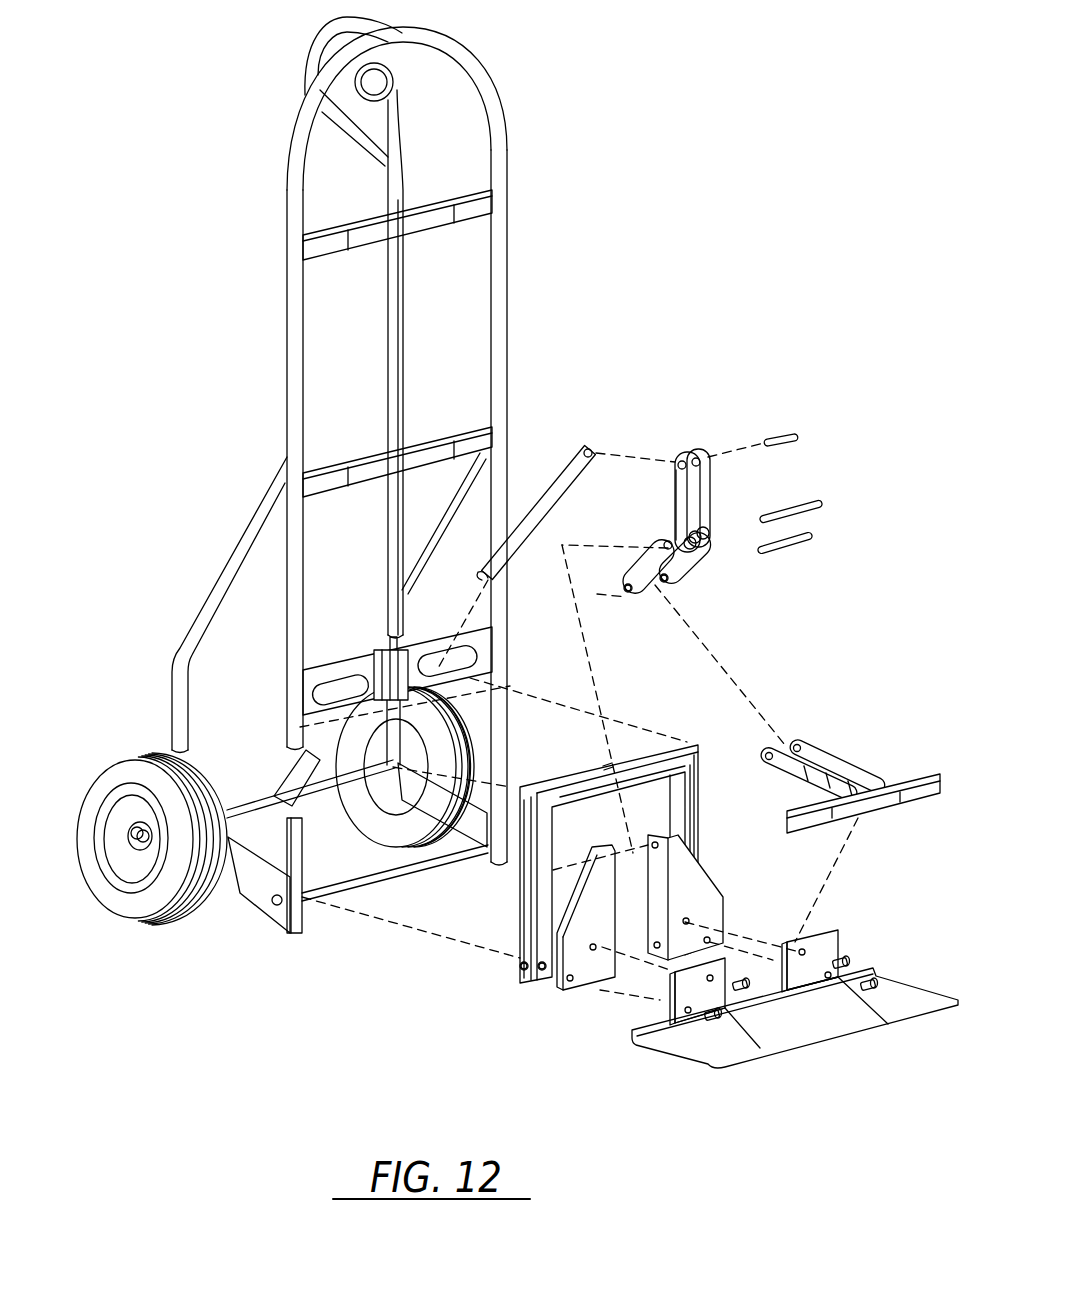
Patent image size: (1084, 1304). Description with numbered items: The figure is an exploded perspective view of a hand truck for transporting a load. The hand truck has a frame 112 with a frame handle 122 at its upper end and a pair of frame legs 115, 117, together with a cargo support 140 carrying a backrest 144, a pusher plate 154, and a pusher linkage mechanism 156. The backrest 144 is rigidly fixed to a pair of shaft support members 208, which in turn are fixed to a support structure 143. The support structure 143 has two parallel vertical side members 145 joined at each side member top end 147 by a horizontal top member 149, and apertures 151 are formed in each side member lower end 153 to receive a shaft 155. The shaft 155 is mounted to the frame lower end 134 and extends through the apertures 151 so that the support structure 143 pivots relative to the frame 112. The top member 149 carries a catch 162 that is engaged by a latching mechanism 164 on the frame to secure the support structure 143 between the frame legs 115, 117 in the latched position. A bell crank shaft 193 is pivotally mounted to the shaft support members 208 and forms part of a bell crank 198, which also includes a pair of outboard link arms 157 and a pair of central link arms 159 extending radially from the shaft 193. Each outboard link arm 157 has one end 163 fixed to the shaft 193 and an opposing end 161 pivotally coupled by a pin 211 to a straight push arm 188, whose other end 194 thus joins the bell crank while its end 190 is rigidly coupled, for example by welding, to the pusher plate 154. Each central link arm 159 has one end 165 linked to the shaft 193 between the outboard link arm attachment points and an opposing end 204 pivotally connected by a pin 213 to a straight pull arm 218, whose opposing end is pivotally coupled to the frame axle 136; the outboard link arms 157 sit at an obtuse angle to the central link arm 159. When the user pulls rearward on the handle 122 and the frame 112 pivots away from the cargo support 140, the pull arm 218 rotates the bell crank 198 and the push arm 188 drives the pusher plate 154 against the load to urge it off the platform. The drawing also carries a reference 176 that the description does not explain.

The frame 112 is at (505, 287).
The frame handle 122 is at (305, 58).
The frame leg 117 is at (298, 660).
The frame leg 115 is at (500, 655).
The latching mechanism 164 is at (380, 660).
The pull arm 218 is at (542, 500).
The pin 213 is at (792, 435).
The central link arm end 204 is at (687, 453).
The central link arm 159 is at (680, 480).
The bell crank 198 is at (668, 548).
The outboard link arm 157 is at (690, 566).
The outboard link arm end 161 is at (630, 596).
The outboard link arm end 163 is at (705, 545).
The central link arm end 165 is at (700, 532).
The pusher linkage mechanism 156 is at (832, 463).
The bell crank shaft 193 is at (825, 512).
The pin 211 is at (813, 545).
The support structure 143 is at (698, 745).
The catch 162 is at (592, 767).
The top member 149 is at (607, 760).
The side member top end 147 is at (696, 793).
The side member 145 is at (700, 853).
The shaft support member 208 is at (712, 905).
The push arm end 194 is at (775, 752).
The push arm 188 is at (830, 770).
The push arm end 190 is at (878, 786).
The pusher plate 154 is at (930, 793).
The direction arrow 176 is at (868, 830).
The frame axle 136 is at (318, 800).
The shaft 155 is at (378, 893).
The frame lower end 134 is at (300, 932).
The side member lower end 153 is at (522, 962).
The aperture 151 is at (524, 970).
The backrest 144 is at (832, 946).
The cargo support 140 is at (842, 1042).